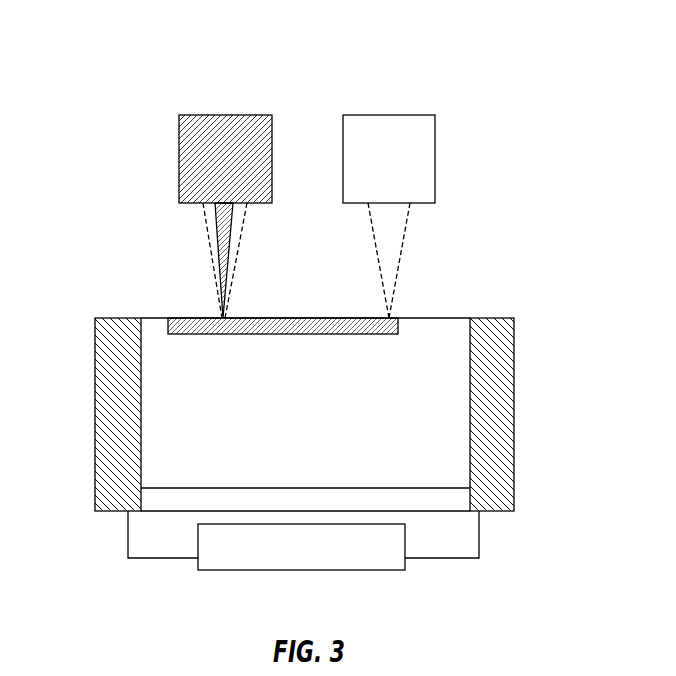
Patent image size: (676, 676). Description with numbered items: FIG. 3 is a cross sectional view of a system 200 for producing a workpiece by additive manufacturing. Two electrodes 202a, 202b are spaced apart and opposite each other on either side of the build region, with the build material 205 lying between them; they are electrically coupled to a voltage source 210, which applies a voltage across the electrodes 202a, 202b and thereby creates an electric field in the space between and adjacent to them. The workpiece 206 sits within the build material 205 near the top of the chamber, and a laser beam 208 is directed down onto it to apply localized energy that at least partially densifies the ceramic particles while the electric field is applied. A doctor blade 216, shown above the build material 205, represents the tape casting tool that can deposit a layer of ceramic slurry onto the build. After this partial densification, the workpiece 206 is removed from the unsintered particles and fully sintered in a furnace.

The system 200 is at (90, 119).
The first electrode 202a is at (119, 514).
The second electrode 202b is at (496, 514).
The build material 205 is at (449, 316).
The workpiece 206 is at (190, 316).
The laser beam 208 is at (272, 162).
The voltage source 210 is at (284, 558).
The doctor blade 216 is at (435, 162).